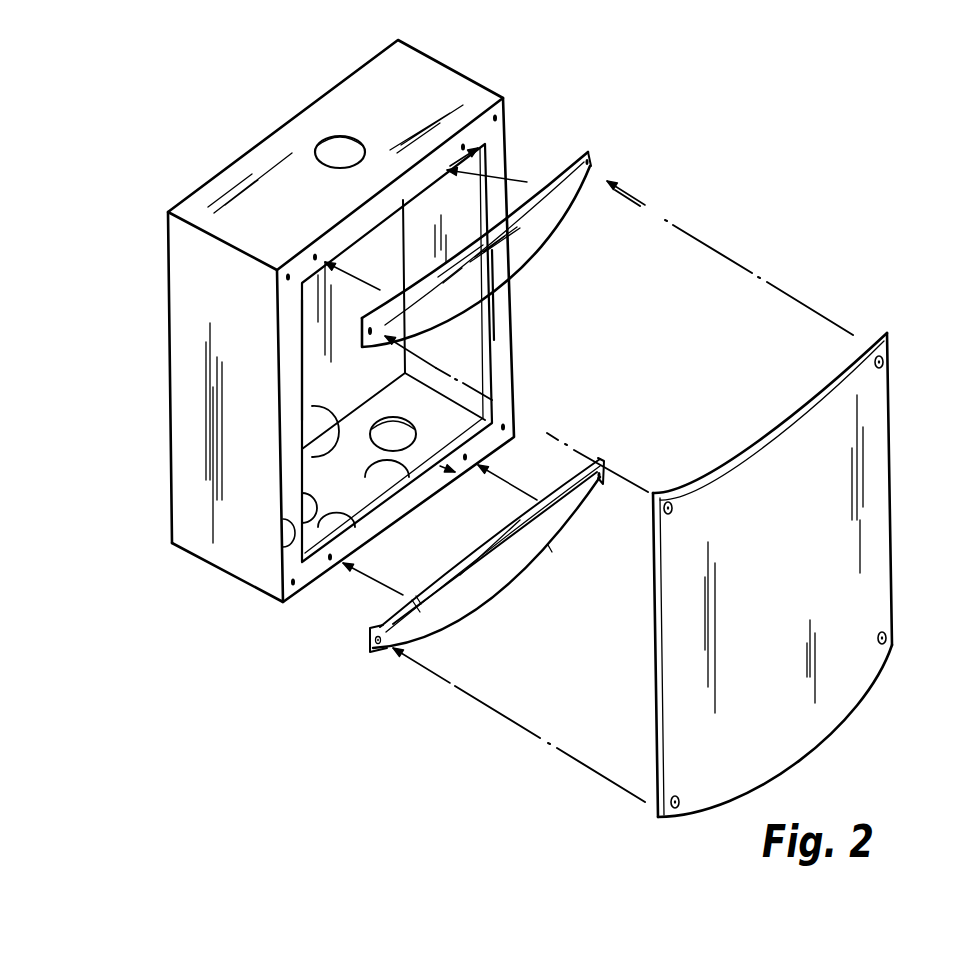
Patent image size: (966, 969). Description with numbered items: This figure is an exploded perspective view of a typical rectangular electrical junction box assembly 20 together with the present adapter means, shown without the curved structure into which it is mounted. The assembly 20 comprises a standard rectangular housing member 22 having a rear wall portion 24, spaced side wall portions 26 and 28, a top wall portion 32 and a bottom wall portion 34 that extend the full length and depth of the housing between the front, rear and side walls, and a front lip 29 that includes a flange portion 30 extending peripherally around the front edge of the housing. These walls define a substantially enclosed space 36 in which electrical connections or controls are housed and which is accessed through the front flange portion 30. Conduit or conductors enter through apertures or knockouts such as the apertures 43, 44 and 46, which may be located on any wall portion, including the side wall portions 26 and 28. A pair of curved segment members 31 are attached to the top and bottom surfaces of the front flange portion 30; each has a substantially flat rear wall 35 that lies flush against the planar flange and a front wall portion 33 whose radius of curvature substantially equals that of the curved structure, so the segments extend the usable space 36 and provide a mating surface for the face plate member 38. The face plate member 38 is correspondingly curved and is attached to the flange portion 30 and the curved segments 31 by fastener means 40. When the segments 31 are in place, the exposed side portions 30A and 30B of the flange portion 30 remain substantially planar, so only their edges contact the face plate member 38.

The junction box assembly 20 is at (153, 563).
The housing member 22 is at (170, 473).
The rear wall portion 24 is at (169, 210).
The side wall portion 26 is at (205, 303).
The side wall portion 28 is at (470, 343).
The front lip 29 is at (498, 98).
The flange portion 30 is at (447, 170).
The side portion of front flange 30A is at (288, 366).
The side portion of front flange 30B is at (500, 314).
The curved segment member 31 is at (582, 147).
The top wall portion 32 is at (427, 83).
The front wall portion of curved segment 33 is at (575, 202).
The bottom wall portion 34 is at (409, 477).
The rear wall of curved segment 35 is at (370, 621).
The enclosed space 36 is at (337, 457).
The face plate member 38 is at (872, 514).
The fastener means 40 is at (885, 363).
The aperture 43 is at (352, 558).
The aperture 44 is at (430, 440).
The aperture 46 is at (336, 136).